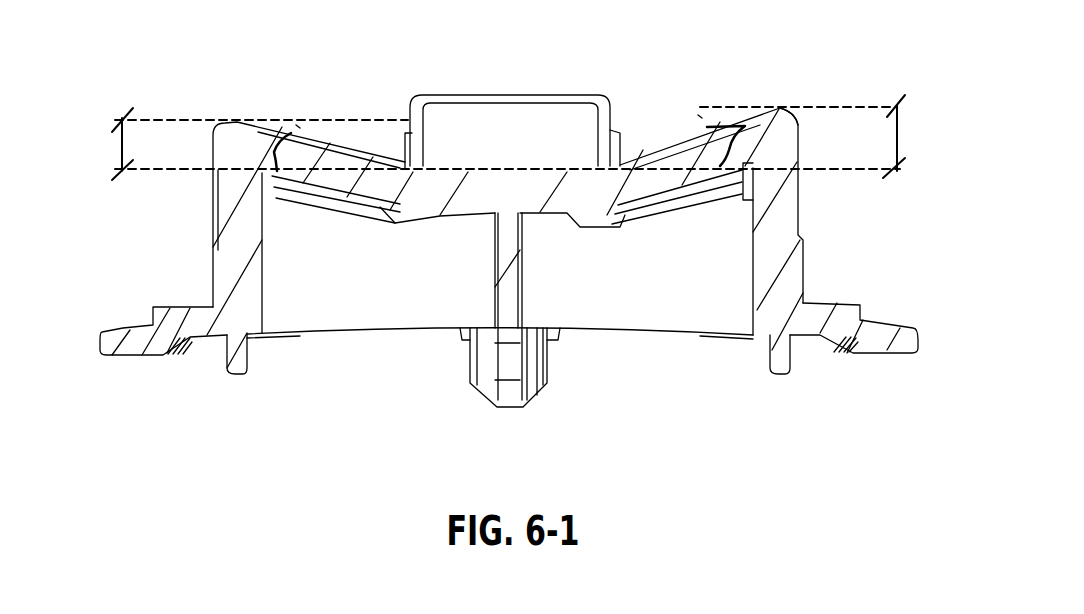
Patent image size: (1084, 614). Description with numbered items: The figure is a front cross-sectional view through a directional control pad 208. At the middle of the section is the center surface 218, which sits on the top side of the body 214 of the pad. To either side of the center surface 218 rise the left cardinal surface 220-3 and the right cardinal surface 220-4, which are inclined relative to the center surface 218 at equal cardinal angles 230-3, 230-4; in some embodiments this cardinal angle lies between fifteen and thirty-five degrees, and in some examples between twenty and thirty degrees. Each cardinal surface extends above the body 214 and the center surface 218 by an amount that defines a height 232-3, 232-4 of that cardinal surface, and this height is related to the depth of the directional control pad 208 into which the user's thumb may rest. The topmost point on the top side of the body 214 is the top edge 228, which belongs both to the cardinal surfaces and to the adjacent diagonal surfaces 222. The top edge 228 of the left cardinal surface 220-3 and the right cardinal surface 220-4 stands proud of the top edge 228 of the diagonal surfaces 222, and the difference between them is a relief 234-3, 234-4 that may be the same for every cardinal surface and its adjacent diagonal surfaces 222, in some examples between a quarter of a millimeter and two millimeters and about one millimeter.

The directional control pad 208 is at (805, 41).
The body 214 is at (490, 207).
The center surface 218 is at (508, 168).
The left cardinal surface 220-3 is at (352, 150).
The right cardinal surface 220-4 is at (649, 153).
The diagonal surface 222 is at (322, 133).
The top edge 228 is at (790, 117).
The cardinal angle 230-3 is at (272, 152).
The cardinal angle 230-4 is at (745, 126).
The height 232-3 is at (120, 149).
The height 232-4 is at (897, 140).
The relief 234-3 is at (300, 127).
The relief 234-4 is at (696, 112).